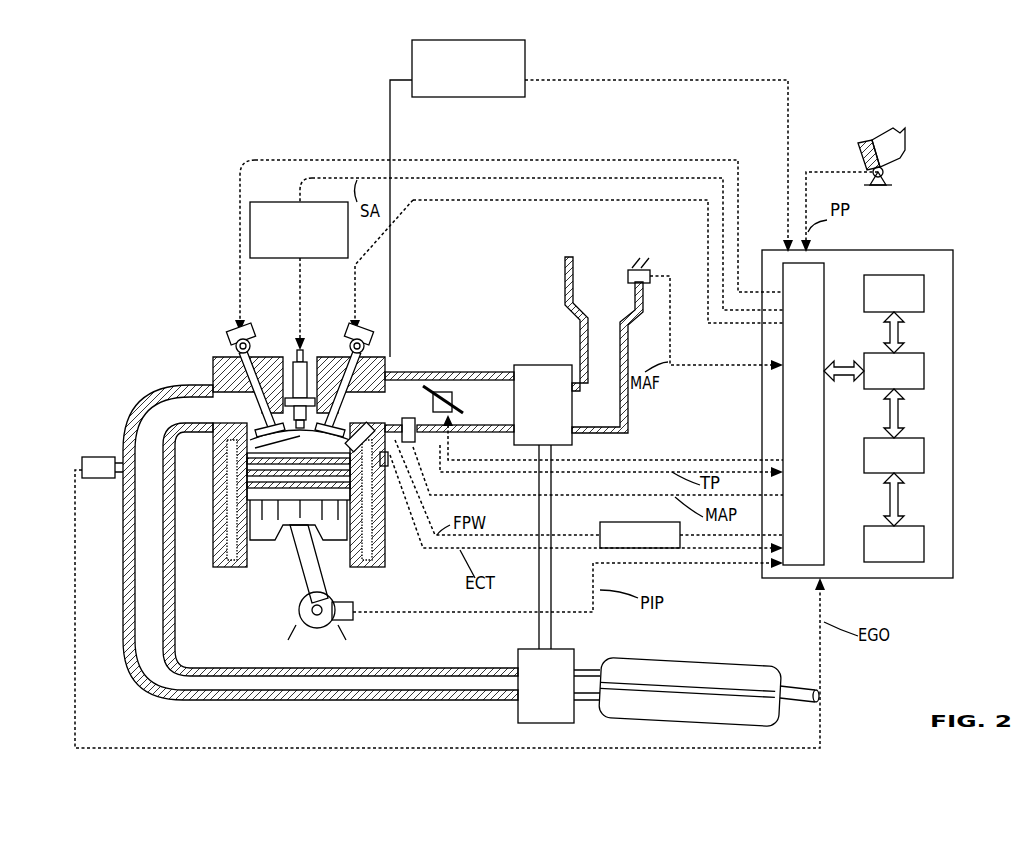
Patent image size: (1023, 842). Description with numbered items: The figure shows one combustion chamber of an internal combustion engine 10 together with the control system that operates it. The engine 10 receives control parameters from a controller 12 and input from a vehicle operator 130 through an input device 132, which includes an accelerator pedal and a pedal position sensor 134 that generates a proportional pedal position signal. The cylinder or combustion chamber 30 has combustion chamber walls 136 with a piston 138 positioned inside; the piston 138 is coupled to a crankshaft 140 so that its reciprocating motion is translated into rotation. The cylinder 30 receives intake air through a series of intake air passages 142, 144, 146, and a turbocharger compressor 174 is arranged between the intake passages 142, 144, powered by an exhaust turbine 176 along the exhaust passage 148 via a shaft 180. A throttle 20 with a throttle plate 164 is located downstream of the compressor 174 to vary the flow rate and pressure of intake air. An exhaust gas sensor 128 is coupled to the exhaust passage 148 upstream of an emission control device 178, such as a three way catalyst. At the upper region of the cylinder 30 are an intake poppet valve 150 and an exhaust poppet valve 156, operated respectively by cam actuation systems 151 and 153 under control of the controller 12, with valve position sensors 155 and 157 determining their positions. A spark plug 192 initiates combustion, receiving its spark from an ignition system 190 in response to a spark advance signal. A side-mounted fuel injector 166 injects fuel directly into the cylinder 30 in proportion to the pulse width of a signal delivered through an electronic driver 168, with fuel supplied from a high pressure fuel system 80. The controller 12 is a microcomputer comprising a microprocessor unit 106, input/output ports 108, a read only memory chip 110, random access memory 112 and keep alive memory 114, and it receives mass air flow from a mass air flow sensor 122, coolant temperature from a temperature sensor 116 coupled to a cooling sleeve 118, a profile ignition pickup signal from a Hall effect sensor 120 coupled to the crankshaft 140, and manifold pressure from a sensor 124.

The internal combustion engine 10 is at (68, 105).
The controller 12 is at (955, 252).
The throttle 20 is at (426, 378).
The cylinder (combustion chamber) 30 is at (308, 466).
The fuel system 80 is at (525, 47).
The microprocessor unit 106 is at (925, 365).
The input/output ports 108 is at (830, 263).
The read only memory chip 110 is at (925, 285).
The random access memory 112 is at (925, 452).
The keep alive memory 114 is at (925, 540).
The temperature sensor 116 is at (390, 470).
The cooling sleeve 118 is at (374, 480).
The Hall effect sensor 120 is at (345, 622).
The mass air flow sensor 122 is at (652, 262).
The manifold pressure sensor 124 is at (418, 447).
The exhaust gas sensor 128 is at (82, 462).
The vehicle operator 130 is at (890, 151).
The input device 132 is at (862, 150).
The pedal position sensor 134 is at (893, 176).
The combustion chamber walls 136 is at (302, 516).
The piston 138 is at (283, 525).
The crankshaft 140 is at (302, 622).
The intake air passage 142 is at (617, 298).
The intake air passage 144 is at (500, 413).
The intake air passage 146 is at (415, 413).
The exhaust passage 148 is at (200, 418).
The intake poppet valve 150 is at (312, 395).
The cam actuation system 151 is at (346, 328).
The cam actuation system 153 is at (250, 328).
The valve position sensor 155 is at (352, 360).
The exhaust poppet valve 156 is at (262, 400).
The valve position sensor 157 is at (232, 338).
The throttle plate 164 is at (425, 388).
The fuel injector 166 is at (360, 427).
The electronic driver 168 is at (603, 522).
The compressor 174 is at (522, 365).
The exhaust turbine 176 is at (518, 715).
The emission control device 178 is at (745, 665).
The shaft 180 is at (552, 622).
The ignition system 190 is at (262, 202).
The spark plug 192 is at (292, 375).